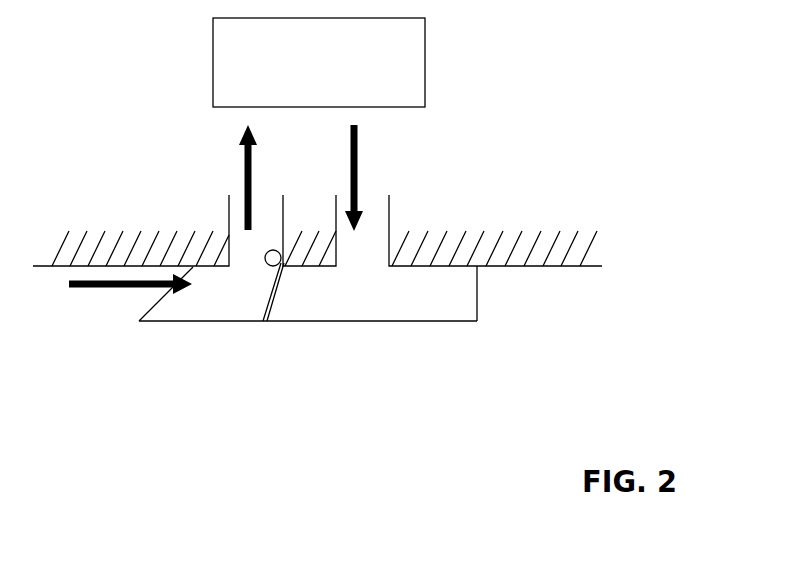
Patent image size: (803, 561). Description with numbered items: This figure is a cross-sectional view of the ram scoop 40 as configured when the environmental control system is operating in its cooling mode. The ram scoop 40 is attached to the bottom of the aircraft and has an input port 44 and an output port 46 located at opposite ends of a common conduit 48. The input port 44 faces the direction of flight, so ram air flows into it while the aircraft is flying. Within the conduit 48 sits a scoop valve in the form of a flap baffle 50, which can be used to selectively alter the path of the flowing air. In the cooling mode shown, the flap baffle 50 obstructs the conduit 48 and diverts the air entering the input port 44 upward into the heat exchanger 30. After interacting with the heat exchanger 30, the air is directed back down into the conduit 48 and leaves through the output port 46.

The heat exchanger 30 is at (425, 79).
The ram scoop 40 is at (235, 321).
The input port 44 is at (158, 300).
The output port 46 is at (477, 300).
The conduit 48 is at (413, 307).
The flap baffle 50 is at (277, 298).